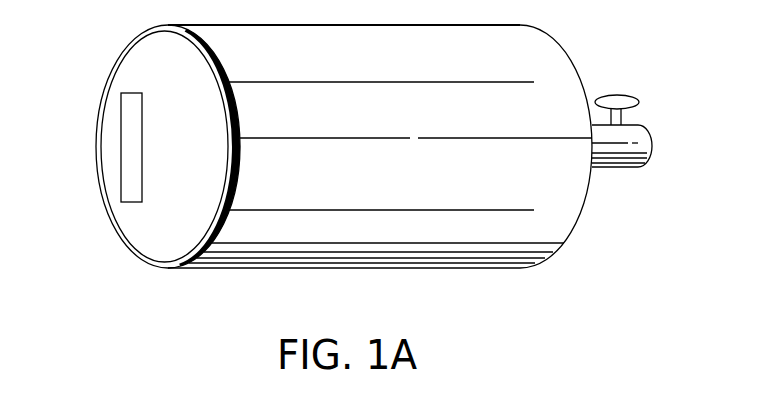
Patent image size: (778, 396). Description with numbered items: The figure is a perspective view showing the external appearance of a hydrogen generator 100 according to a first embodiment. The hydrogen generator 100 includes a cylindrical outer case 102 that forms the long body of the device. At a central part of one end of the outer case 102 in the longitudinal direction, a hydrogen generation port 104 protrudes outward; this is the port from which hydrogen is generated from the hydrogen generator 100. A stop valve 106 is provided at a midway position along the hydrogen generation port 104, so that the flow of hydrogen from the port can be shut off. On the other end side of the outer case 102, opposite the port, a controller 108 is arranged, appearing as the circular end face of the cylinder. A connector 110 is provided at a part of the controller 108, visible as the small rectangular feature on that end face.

The hydrogen generator 100 is at (272, 268).
The cylindrical outer case 102 is at (448, 270).
The hydrogen generation port 104 is at (656, 143).
The stop valve 106 is at (622, 98).
The controller 108 is at (160, 238).
The connector 110 is at (132, 180).